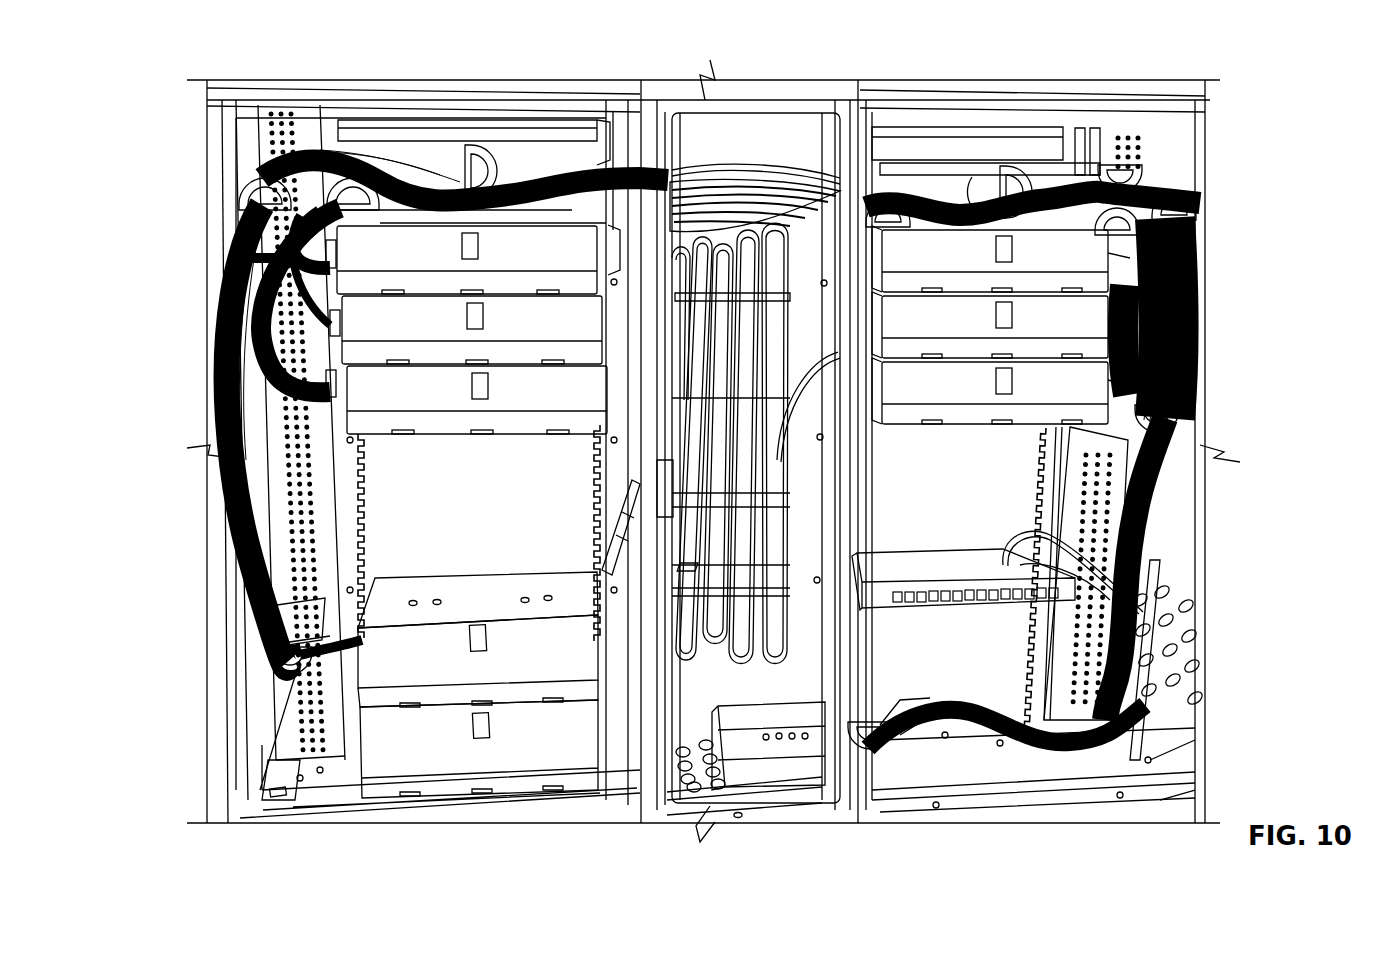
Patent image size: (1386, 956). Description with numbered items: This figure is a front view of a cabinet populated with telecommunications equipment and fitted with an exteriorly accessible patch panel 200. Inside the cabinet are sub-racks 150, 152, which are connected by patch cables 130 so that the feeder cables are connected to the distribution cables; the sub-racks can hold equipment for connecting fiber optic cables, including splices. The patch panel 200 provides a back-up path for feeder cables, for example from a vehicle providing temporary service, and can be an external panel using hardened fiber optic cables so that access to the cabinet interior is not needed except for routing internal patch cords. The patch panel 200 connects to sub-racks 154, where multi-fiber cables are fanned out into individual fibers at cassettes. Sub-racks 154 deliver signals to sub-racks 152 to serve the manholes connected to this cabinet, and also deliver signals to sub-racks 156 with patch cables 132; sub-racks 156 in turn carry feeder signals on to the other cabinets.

The patch cables 130 is at (735, 205).
The patch cables 132 is at (235, 522).
The sub-racks 150 is at (1100, 253).
The sub-racks 152 is at (357, 257).
The sub-racks 154 is at (1040, 527).
The sub-racks 156 is at (375, 673).
The patch panel 200 is at (1175, 592).